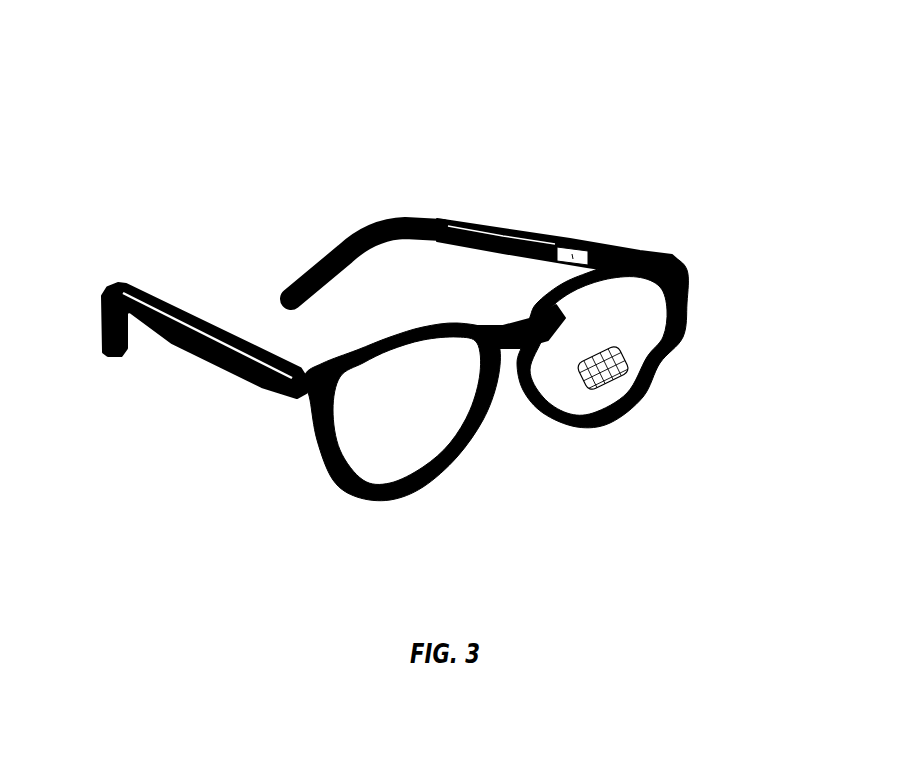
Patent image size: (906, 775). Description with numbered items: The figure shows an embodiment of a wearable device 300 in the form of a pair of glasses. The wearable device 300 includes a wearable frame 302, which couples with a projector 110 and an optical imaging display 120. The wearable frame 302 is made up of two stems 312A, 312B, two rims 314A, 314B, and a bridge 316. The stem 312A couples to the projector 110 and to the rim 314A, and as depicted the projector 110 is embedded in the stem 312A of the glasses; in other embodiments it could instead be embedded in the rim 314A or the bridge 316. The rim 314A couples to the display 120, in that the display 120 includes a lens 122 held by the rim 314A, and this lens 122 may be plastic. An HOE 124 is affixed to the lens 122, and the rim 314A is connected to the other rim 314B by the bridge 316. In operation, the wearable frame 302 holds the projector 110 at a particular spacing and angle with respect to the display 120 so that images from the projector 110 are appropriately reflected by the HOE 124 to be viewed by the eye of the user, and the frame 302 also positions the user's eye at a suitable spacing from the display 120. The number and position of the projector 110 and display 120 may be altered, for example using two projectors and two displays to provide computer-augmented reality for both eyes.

The wearable device 300 is at (439, 279).
The wearable frame 302 is at (413, 157).
The stem 312A is at (318, 258).
The stem 312B is at (210, 367).
The rim 314A is at (533, 417).
The rim 314B is at (393, 507).
The bridge 316 is at (503, 330).
The projector 110 is at (571, 249).
The lens 122 is at (647, 320).
The HOE 124 is at (630, 351).
The optical imaging display 120 is at (750, 460).